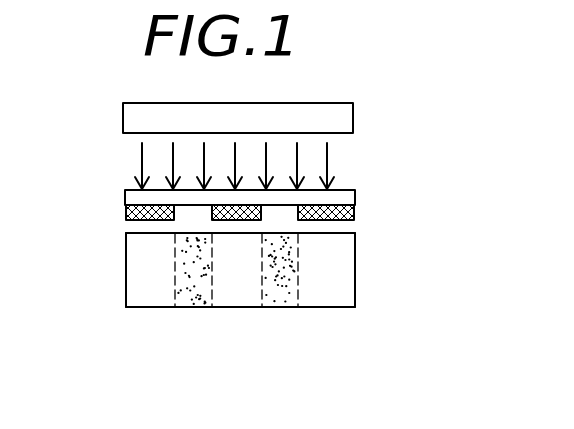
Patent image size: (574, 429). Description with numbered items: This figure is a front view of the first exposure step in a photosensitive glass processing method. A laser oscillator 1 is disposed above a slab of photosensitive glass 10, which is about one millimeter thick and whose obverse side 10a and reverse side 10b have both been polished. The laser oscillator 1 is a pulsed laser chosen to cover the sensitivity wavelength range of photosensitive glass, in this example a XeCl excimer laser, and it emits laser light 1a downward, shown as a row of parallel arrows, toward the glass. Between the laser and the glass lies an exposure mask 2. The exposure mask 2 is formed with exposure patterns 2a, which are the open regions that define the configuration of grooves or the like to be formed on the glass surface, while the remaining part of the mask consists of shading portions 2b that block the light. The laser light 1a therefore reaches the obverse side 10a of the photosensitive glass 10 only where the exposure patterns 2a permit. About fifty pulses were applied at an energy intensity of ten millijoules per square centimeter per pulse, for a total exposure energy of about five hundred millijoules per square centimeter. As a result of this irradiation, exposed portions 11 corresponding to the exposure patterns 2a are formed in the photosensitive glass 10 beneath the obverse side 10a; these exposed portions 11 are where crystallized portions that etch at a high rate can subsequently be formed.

The laser oscillator 1 is at (355, 112).
The laser light 1a is at (338, 162).
The exposure mask 2 is at (300, 235).
The exposure patterns 2a is at (287, 217).
The shading portions 2b is at (356, 212).
The photosensitive glass 10 is at (106, 271).
The obverse side 10a is at (130, 233).
The reverse side 10b is at (147, 307).
The exposed portions 11 is at (202, 313).